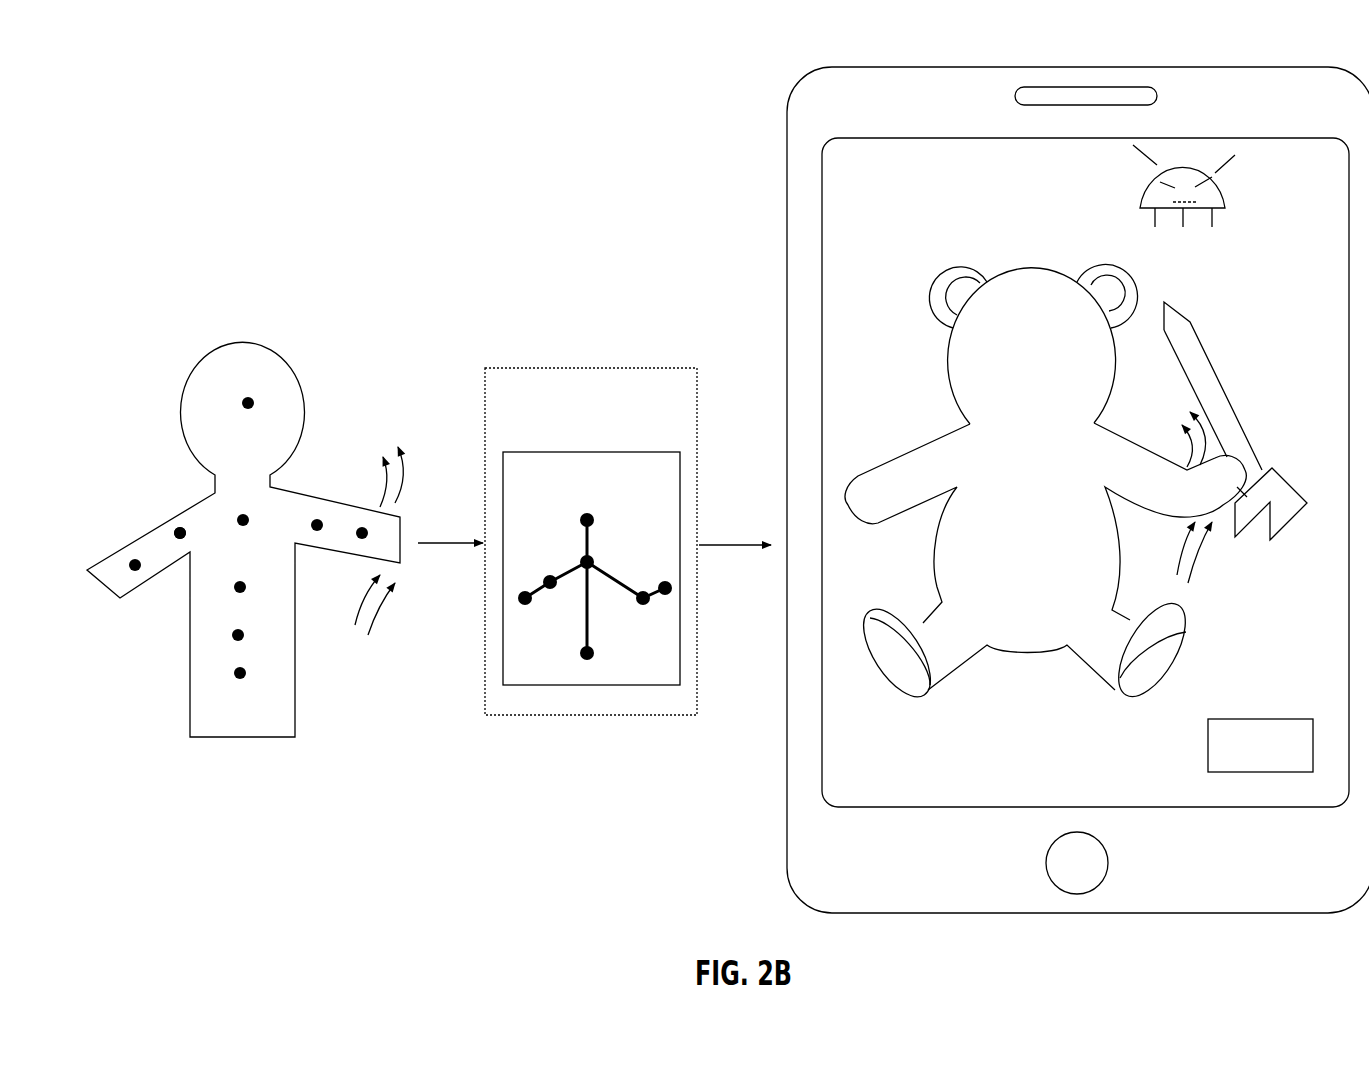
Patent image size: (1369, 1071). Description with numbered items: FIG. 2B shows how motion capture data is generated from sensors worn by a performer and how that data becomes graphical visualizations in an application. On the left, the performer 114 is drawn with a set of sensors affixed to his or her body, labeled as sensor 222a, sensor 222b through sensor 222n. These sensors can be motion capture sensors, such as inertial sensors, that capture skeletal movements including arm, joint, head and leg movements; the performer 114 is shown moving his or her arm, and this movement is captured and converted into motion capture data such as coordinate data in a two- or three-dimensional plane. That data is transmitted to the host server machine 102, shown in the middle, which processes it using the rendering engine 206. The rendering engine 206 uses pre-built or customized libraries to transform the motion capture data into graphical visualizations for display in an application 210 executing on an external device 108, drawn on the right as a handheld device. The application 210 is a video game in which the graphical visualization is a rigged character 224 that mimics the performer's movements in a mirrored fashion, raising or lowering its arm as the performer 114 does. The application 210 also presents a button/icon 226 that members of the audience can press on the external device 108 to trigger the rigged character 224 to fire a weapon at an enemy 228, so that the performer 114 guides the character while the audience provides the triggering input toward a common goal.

The performer 114 is at (290, 362).
The sensor 222a is at (248, 403).
The sensor 222b is at (240, 673).
The sensor 222n is at (180, 533).
The host server machine 102 is at (608, 414).
The rendering engine 206 is at (608, 489).
The external device 108 is at (787, 182).
The application 210 is at (877, 181).
The rigged character 224 is at (925, 293).
The button/icon 226 is at (1208, 750).
The enemy 228 is at (1140, 193).